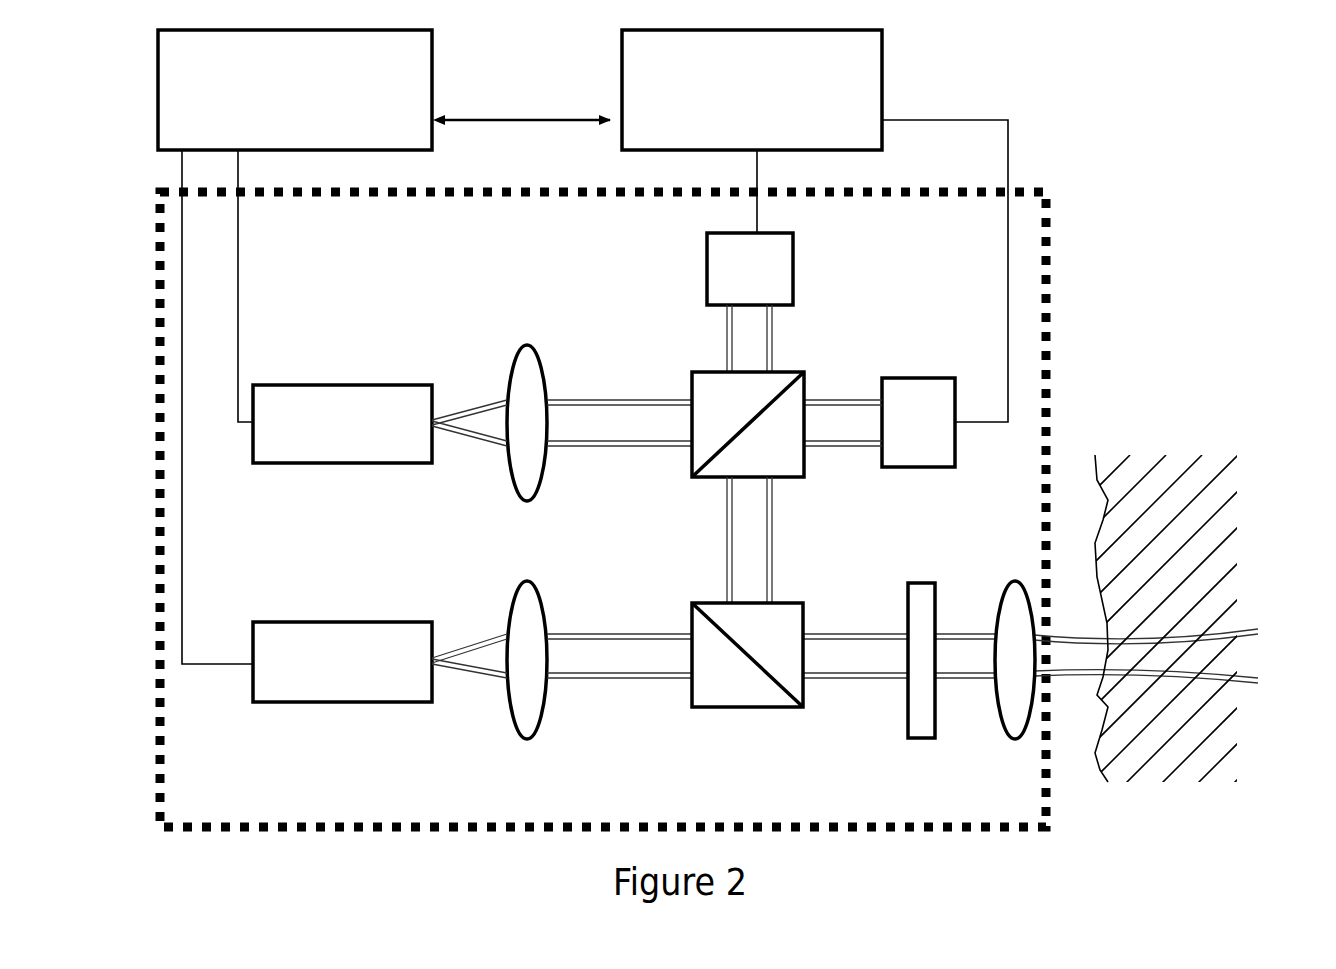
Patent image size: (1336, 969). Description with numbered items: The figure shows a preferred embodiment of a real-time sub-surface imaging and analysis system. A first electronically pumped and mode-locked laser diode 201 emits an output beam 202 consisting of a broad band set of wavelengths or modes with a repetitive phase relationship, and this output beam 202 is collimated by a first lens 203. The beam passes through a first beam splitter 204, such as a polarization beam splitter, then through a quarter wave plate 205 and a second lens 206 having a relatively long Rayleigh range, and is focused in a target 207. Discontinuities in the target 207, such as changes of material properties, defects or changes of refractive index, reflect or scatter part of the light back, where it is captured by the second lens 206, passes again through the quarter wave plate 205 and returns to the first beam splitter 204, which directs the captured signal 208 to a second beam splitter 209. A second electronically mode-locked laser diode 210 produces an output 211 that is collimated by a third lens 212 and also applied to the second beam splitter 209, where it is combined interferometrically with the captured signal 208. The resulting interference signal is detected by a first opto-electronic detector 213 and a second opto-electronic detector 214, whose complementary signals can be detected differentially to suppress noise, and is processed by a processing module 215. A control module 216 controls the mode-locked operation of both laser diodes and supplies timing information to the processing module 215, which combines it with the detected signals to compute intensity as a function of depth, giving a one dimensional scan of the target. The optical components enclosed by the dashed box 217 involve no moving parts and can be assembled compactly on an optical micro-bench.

The first electronically pumped and mode-locked laser diode 201 is at (345, 712).
The output beam 202 is at (608, 587).
The first lens 203 is at (520, 747).
The first beam splitter 204 is at (776, 718).
The quarter wave plate 205 is at (915, 744).
The second lens 206 is at (1013, 748).
The target 207 is at (1180, 438).
The captured signal 208 is at (775, 513).
The second beam splitter 209 is at (702, 490).
The second electronically mode-locked laser diode 210 is at (345, 472).
The output 211 is at (612, 497).
The third lens 212 is at (521, 340).
The first opto-electronic detector 213 is at (920, 372).
The second opto-electronic detector 214 is at (698, 257).
The processing module 215 is at (888, 82).
The control module 216 is at (438, 82).
The dashed box 217 is at (1062, 232).